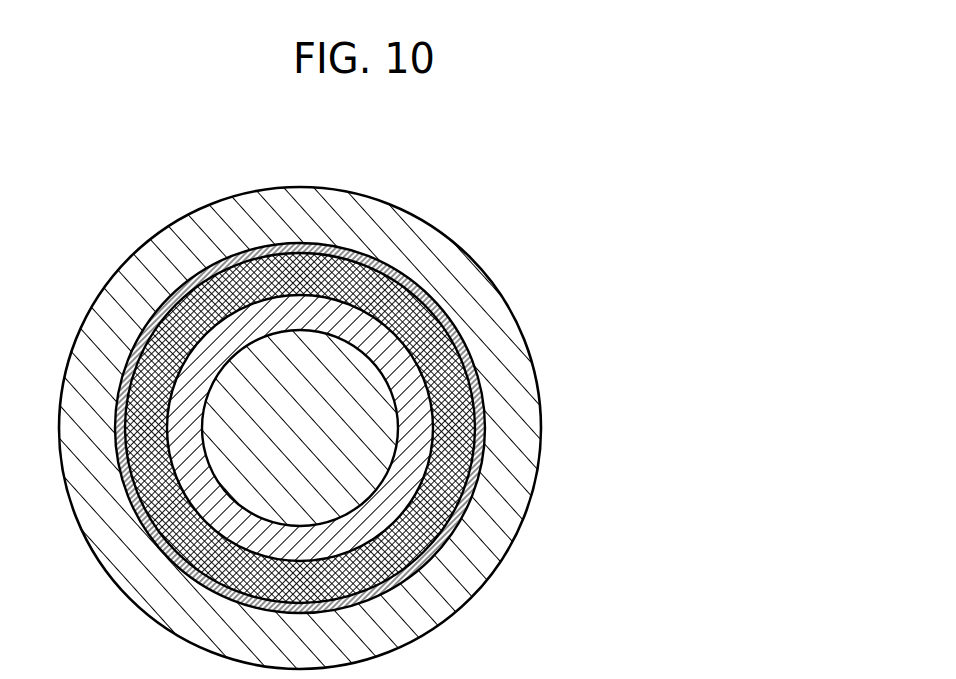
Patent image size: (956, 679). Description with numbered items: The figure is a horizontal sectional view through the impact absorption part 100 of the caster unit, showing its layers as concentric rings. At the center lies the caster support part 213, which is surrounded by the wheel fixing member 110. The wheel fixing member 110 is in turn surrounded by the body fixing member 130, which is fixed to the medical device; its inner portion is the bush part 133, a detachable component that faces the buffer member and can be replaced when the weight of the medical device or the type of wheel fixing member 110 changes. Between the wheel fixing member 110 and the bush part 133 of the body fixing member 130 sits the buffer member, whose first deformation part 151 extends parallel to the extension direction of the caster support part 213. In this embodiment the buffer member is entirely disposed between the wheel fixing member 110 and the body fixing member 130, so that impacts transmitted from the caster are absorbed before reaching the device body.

The impact absorption part 100 is at (334, 376).
The body fixing member 130 is at (485, 300).
The bush part 133 is at (463, 339).
The first deformation part 151 is at (453, 388).
The wheel fixing member 110 is at (420, 426).
The caster support part 213 is at (358, 457).